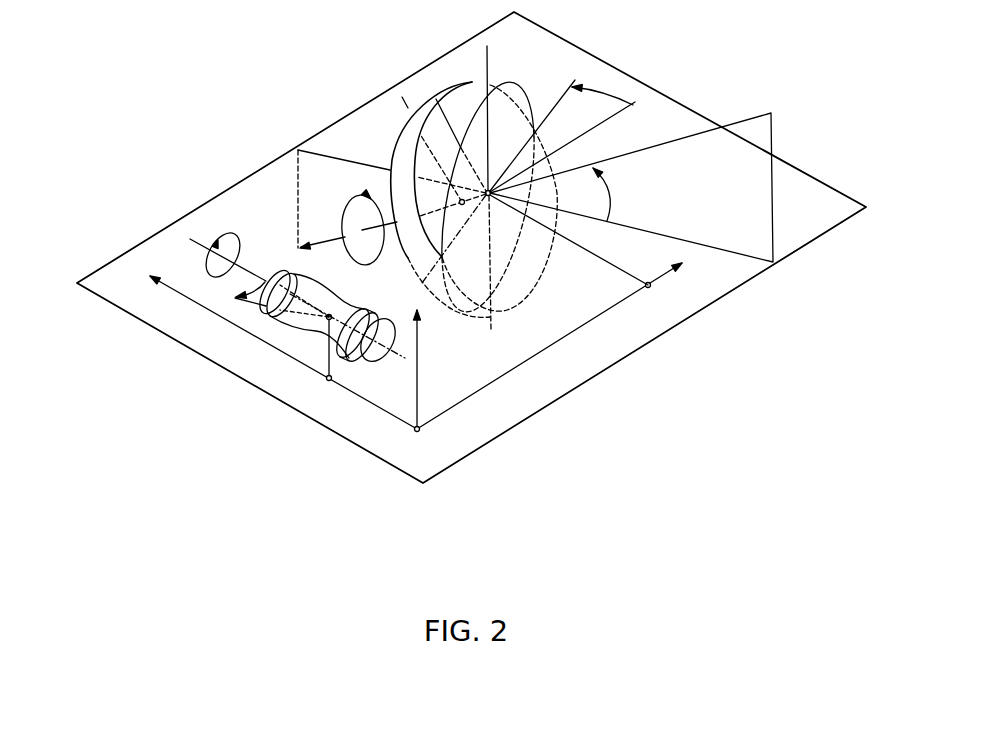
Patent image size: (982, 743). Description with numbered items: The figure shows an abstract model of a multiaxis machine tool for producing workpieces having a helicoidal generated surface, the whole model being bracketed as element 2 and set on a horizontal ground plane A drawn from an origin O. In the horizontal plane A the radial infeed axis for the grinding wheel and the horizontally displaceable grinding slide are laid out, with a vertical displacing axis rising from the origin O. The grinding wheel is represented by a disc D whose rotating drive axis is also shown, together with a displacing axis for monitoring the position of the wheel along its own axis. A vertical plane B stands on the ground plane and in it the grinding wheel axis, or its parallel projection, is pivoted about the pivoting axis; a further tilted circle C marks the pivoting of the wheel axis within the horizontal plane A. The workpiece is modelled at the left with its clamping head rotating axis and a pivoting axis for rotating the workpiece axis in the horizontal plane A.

The spray nozzle coordinate model 2 is at (472, 307).
The coordinate origin O is at (415, 356).
The horizontal plane A is at (502, 183).
The vertical plane B is at (631, 187).
The tilted reference circle C is at (538, 185).
The rotating disc D is at (440, 199).